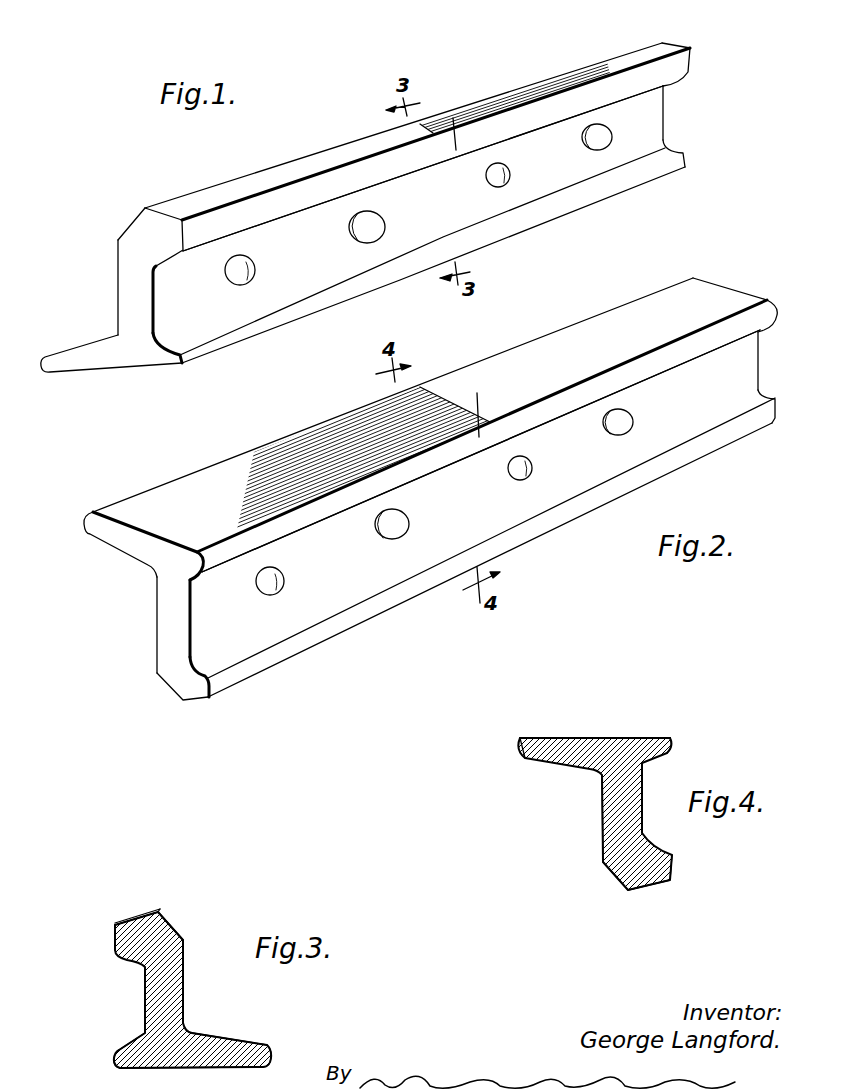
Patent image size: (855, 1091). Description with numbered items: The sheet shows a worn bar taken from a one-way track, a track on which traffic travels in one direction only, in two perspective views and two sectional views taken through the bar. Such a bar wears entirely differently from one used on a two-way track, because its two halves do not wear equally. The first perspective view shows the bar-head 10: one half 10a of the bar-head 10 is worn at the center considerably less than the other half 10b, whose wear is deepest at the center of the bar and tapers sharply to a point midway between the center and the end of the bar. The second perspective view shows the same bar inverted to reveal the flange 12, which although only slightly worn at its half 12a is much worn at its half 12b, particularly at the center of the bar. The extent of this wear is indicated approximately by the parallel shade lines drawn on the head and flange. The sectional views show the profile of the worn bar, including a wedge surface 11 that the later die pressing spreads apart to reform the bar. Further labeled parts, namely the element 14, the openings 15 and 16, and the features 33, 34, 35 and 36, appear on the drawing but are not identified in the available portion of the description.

In FIG. 1, the bar-head 10 is at (150, 218).
In FIG. 2, the bar-head 10 is at (188, 682).
In FIG. 4, the bar-head 10 is at (643, 870).
In FIG. 3, the bar-head 10 is at (145, 943).
In FIG. 1, the half of bar-head 10a is at (241, 188).
In FIG. 3, the half of bar-head 10a is at (145, 910).
In FIG. 1, the half of bar-head 10b is at (565, 83).
In FIG. 3, the half of bar-head 10b is at (120, 922).
In FIG. 2, the wedge surface 11 is at (193, 700).
In FIG. 1, the flange 12 is at (112, 367).
In FIG. 2, the flange 12 is at (128, 547).
In FIG. 4, the flange 12 is at (585, 768).
In FIG. 3, the flange 12 is at (203, 1042).
In FIG. 2, the half of flange 12a is at (587, 328).
In FIG. 4, the half of flange 12a is at (550, 738).
In FIG. 2, the half of flange 12b is at (244, 465).
In FIG. 4, the half of flange 12b is at (625, 740).
In FIG. 1, the web 14 is at (442, 212).
In FIG. 2, the web 14 is at (167, 632).
In FIG. 4, the web 14 is at (612, 815).
In FIG. 3, the web 14 is at (173, 982).
In FIG. 1, the large bolt hole 15 is at (360, 230).
In FIG. 2, the large bolt hole 15 is at (386, 526).
In FIG. 1, the small bolt hole 16 is at (246, 272).
In FIG. 2, the small bolt hole 16 is at (269, 584).
In FIG. 1, the shoulder at end of ground portion 33 is at (407, 113).
In FIG. 2, the shoulder at end of ground portion 33 is at (397, 372).
In FIG. 4, the shoulder at end of ground portion 33 is at (520, 738).
In FIG. 3, the shoulder at end of ground portion 33 is at (160, 909).
In FIG. 1, the shoulder at end of ground portion 34 is at (440, 137).
In FIG. 2, the shoulder at end of ground portion 34 is at (493, 415).
In FIG. 4, the shoulder at end of ground portion 34 is at (670, 738).
In FIG. 3, the shoulder at end of ground portion 34 is at (115, 923).
In FIG. 1, the near edge of surface 35 is at (436, 134).
In FIG. 2, the near edge of surface 35 is at (482, 426).
In FIG. 1, the lower edge line 36 is at (423, 168).
In FIG. 2, the lower edge line 36 is at (481, 451).